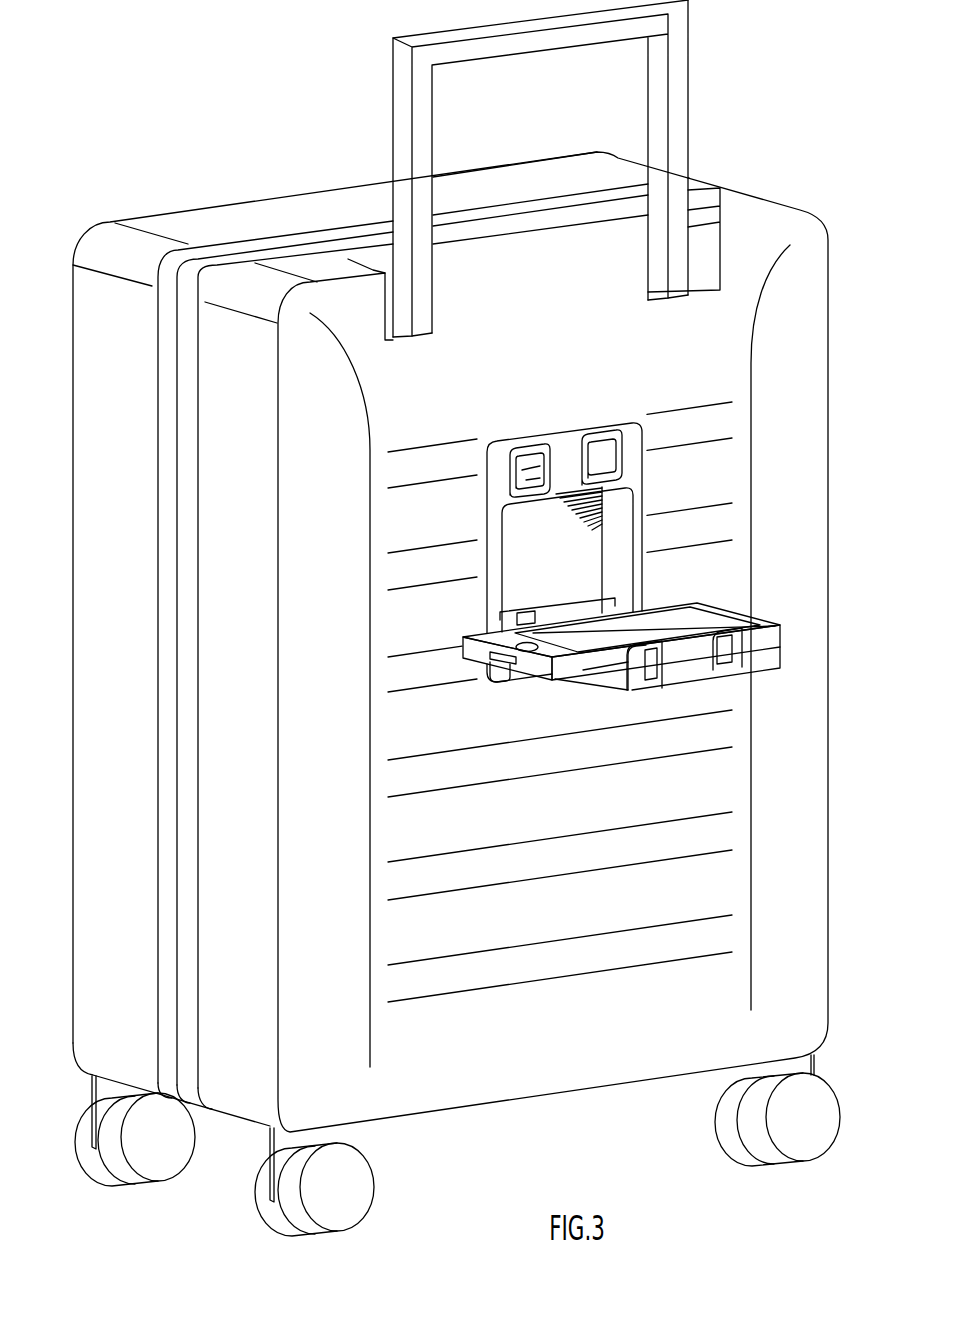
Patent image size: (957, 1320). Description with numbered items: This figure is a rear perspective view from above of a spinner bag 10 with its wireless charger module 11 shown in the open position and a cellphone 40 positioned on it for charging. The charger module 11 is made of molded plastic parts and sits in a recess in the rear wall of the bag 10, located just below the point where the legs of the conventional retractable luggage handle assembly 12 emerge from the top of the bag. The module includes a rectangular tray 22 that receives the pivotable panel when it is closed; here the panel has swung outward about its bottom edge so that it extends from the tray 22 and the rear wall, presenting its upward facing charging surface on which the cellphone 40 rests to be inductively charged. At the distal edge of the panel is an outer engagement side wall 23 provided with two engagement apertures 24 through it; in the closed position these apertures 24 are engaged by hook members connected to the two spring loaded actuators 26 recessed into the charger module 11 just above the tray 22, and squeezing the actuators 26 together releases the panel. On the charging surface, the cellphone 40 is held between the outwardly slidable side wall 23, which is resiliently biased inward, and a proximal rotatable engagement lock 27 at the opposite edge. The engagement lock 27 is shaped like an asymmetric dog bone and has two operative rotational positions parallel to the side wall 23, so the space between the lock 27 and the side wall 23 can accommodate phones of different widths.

The spinner bag 10 is at (790, 130).
The wireless charger module 11 is at (642, 527).
The retractable luggage handle assembly 12 is at (690, 100).
The tray 22 is at (577, 563).
The outer engagement side wall 23 is at (697, 670).
The engagement aperture 24 is at (653, 677).
The spring loaded actuator 26 is at (521, 457).
The engagement lock 27 is at (527, 612).
The cellphone 40 is at (728, 623).